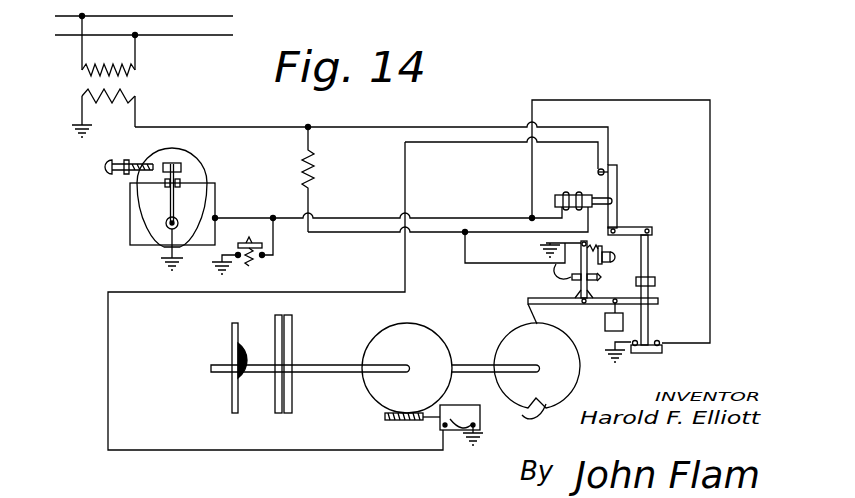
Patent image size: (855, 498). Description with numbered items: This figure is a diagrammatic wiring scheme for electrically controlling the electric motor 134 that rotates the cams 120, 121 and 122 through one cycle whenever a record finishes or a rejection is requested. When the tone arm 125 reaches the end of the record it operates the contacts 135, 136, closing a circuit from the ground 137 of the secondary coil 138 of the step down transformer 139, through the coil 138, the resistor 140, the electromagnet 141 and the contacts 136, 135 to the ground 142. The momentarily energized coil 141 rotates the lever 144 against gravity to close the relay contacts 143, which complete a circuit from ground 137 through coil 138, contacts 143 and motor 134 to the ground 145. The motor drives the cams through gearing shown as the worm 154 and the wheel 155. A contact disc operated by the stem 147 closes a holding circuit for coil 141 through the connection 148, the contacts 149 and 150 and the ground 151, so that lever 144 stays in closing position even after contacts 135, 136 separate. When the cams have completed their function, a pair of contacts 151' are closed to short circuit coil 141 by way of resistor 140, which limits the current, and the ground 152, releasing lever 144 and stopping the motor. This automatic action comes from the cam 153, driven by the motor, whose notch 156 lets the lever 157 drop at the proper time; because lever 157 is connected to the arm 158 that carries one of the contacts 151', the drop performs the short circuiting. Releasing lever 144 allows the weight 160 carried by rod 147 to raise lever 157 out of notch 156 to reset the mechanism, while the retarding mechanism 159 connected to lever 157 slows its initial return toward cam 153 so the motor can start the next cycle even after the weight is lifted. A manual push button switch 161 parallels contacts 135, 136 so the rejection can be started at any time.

The cam 120 is at (277, 315).
The cam 121 is at (296, 301).
The cam 122 is at (231, 333).
The tone arm 125 is at (148, 227).
The electric motor 134 is at (458, 436).
The contact 135 is at (176, 178).
The contact 136 is at (193, 186).
The ground 137 is at (76, 133).
The secondary coil 138 is at (110, 105).
The step down transformer 139 is at (144, 80).
The resistor 140 is at (313, 163).
The electromagnet 141 is at (573, 181).
The ground 142 is at (172, 270).
The relay contacts 143 is at (605, 164).
The lever 144 is at (620, 212).
The ground 145 is at (647, 353).
The stem 147 is at (650, 245).
The connection 148 is at (531, 170).
The contact 149 is at (659, 343).
The contact 150 is at (635, 341).
The ground 151 is at (608, 340).
The contacts 151' is at (543, 274).
The ground 152 is at (541, 246).
The cam 153 is at (572, 368).
The worm 154 is at (402, 416).
The wheel 155 is at (400, 387).
The notch 156 is at (493, 425).
The lever 157 is at (529, 298).
The arm 158 is at (591, 276).
The retarding mechanism 159 is at (605, 319).
The weight 160 is at (656, 281).
The manual push button switch 161 is at (265, 259).